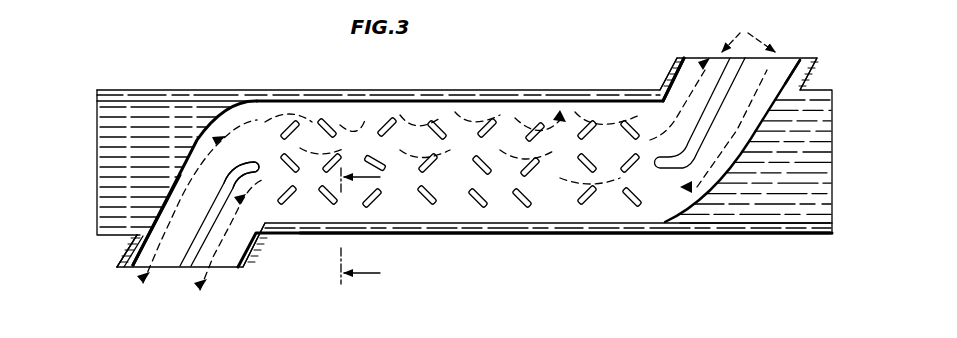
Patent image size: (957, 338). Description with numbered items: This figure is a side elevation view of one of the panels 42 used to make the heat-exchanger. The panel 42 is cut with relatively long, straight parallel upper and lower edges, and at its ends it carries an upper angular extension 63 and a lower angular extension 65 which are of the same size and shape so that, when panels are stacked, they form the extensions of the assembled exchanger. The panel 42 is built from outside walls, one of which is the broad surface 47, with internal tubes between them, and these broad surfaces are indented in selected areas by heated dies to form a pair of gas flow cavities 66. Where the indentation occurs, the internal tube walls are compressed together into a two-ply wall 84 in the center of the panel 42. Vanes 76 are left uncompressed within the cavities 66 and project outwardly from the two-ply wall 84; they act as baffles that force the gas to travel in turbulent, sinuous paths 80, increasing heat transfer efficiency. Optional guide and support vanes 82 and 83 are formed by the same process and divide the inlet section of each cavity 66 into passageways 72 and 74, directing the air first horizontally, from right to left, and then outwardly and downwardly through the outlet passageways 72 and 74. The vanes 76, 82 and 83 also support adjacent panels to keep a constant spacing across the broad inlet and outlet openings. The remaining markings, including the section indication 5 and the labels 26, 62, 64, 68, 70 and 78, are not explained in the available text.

The panel 42 is at (822, 246).
The bottom wall 26 is at (643, 236).
The outside wall 47 is at (774, 226).
The left insulating block 62 is at (97, 201).
The upper angular extension 63 is at (129, 253).
The right insulating block 64 is at (834, 207).
The lower angular extension 65 is at (812, 68).
The gas flow cavity 66 is at (347, 120).
The outlet left wall 68 is at (697, 58).
The outlet right wall 70 is at (794, 58).
The passageway 72 is at (150, 268).
The passageway 74 is at (238, 270).
The vane 76 is at (431, 122).
The outlet flow arrows 78 is at (748, 31).
The sinuous path 80 is at (256, 112).
The guide and support vane 82 is at (657, 167).
The guide and support vane 83 is at (252, 159).
The two-ply wall 84 is at (441, 196).
The section line 5 is at (368, 230).